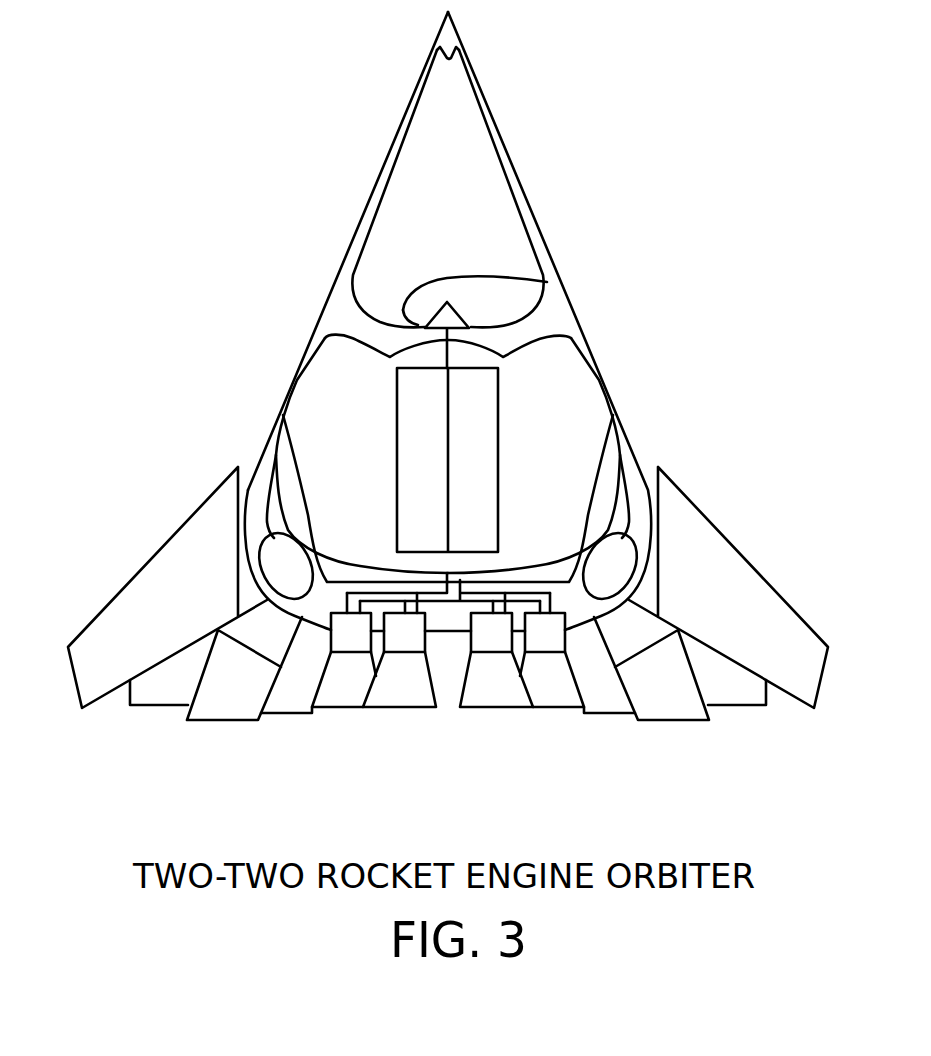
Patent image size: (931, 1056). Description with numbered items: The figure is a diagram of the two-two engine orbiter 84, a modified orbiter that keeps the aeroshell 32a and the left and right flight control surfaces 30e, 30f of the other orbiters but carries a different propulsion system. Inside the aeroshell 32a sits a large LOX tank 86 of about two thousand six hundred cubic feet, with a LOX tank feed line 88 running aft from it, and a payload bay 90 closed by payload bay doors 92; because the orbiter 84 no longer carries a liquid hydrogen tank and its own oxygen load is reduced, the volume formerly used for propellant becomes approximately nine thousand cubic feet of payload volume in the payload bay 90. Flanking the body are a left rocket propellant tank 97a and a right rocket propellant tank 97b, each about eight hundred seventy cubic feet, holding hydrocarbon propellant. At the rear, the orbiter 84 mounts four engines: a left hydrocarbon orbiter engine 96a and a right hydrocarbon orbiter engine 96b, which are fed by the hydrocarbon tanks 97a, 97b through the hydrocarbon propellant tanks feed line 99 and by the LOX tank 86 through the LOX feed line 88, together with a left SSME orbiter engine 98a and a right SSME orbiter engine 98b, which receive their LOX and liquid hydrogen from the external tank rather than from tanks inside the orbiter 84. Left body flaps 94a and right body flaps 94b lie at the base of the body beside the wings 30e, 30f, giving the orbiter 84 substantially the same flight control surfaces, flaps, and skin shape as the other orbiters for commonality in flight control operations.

The orbiter fuselage 32a is at (513, 160).
The two-two engine orbiter 84 is at (401, 124).
The LOX tank 86 is at (487, 125).
The LOX tank feed line 88 is at (547, 282).
The payload bay 90 is at (603, 416).
The payload bay doors 92 is at (397, 413).
The hydrocarbon propellant tanks feed line 99 is at (283, 415).
The left rocket propellant tank 97a is at (253, 503).
The right rocket propellant tank 97b is at (643, 503).
The left flight control surface 30e is at (150, 558).
The right flight control surface 30f is at (746, 558).
The left body flaps 94a is at (282, 713).
The right body flaps 94b is at (614, 713).
The left NK33 orbiter engine 96a is at (342, 708).
The right NK33 orbiter engine 96b is at (554, 708).
The left SSME orbiter engine 98a is at (417, 708).
The SSME orbiter engine 98b is at (479, 708).